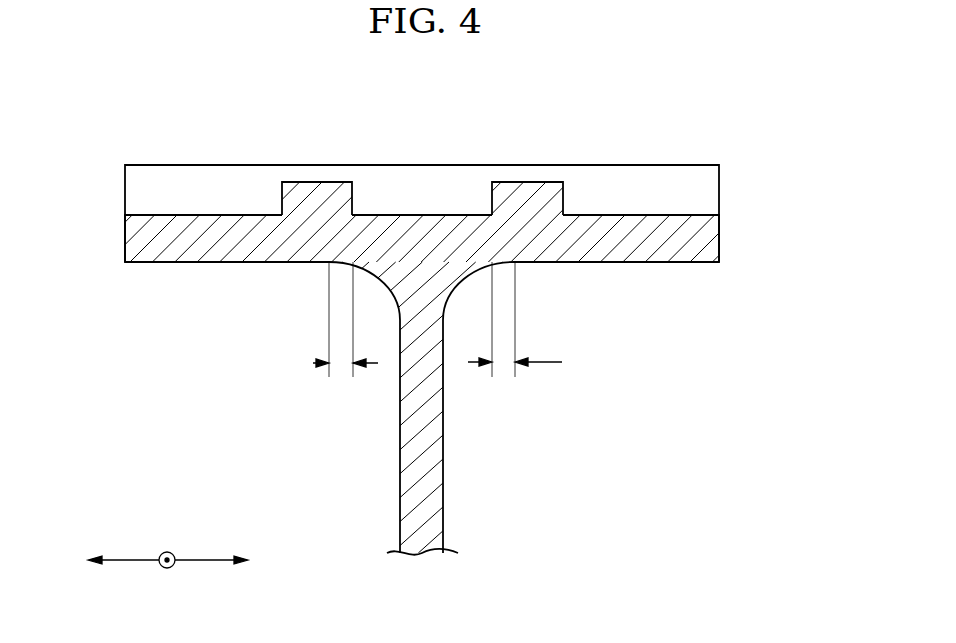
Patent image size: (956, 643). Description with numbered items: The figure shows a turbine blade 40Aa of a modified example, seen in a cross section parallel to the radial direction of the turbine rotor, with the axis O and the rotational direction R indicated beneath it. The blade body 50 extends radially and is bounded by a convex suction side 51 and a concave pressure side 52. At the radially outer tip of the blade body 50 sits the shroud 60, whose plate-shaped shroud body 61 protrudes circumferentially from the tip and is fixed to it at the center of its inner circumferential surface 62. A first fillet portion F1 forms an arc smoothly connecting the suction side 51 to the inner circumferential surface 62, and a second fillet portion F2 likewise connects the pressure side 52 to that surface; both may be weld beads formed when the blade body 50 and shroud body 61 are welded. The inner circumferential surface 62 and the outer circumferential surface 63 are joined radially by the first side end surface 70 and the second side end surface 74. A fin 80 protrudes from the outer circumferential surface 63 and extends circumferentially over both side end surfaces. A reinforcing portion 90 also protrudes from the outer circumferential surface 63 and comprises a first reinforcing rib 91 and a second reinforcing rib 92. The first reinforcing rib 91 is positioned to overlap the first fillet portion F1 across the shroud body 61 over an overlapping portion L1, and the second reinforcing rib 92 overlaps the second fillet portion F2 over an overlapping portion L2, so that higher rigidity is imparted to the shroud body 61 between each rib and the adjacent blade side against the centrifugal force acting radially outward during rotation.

The turbine blade 40Aa is at (753, 135).
The blade body 50 is at (398, 489).
The suction side 51 is at (400, 425).
The pressure side 52 is at (443, 440).
The shroud 60 is at (735, 198).
The shroud body 61 is at (736, 228).
The inner circumferential surface 62 is at (647, 263).
The outer circumferential surface 63 is at (652, 213).
The first side end surface 70 is at (125, 242).
The second side end surface 74 is at (720, 245).
The fin 80 is at (423, 181).
The reinforcing portion 90 is at (307, 165).
The first reinforcing rib 91 is at (328, 186).
The second reinforcing rib 92 is at (535, 186).
The first fillet portion F1 is at (382, 293).
The second fillet portion F2 is at (458, 292).
The overlapping portion L1 is at (330, 319).
The overlapping portion L2 is at (516, 319).
The axis O is at (167, 552).
The rotational direction R is at (207, 562).